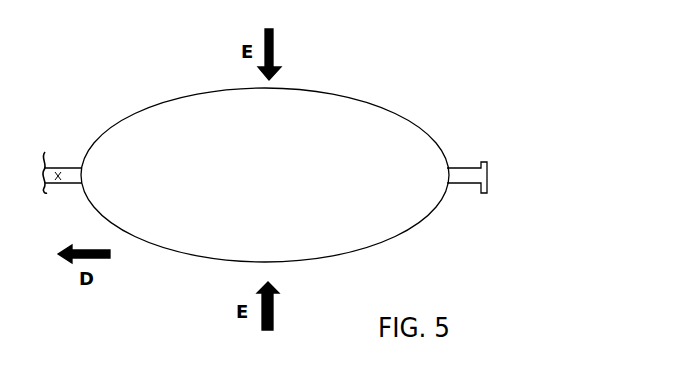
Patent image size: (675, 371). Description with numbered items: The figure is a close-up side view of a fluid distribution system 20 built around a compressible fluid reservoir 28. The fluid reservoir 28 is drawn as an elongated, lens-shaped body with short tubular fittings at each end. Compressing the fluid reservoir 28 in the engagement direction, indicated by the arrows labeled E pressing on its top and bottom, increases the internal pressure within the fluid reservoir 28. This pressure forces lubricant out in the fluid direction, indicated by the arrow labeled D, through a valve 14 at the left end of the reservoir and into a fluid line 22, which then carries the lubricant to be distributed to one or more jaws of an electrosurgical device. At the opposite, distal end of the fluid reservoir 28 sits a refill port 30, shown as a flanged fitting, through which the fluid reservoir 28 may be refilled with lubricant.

The valve 14 is at (58, 176).
The fluid distribution system 20 is at (447, 88).
The fluid line 22 is at (47, 192).
The compressible fluid reservoir 28 is at (330, 120).
The refill port 30 is at (487, 177).